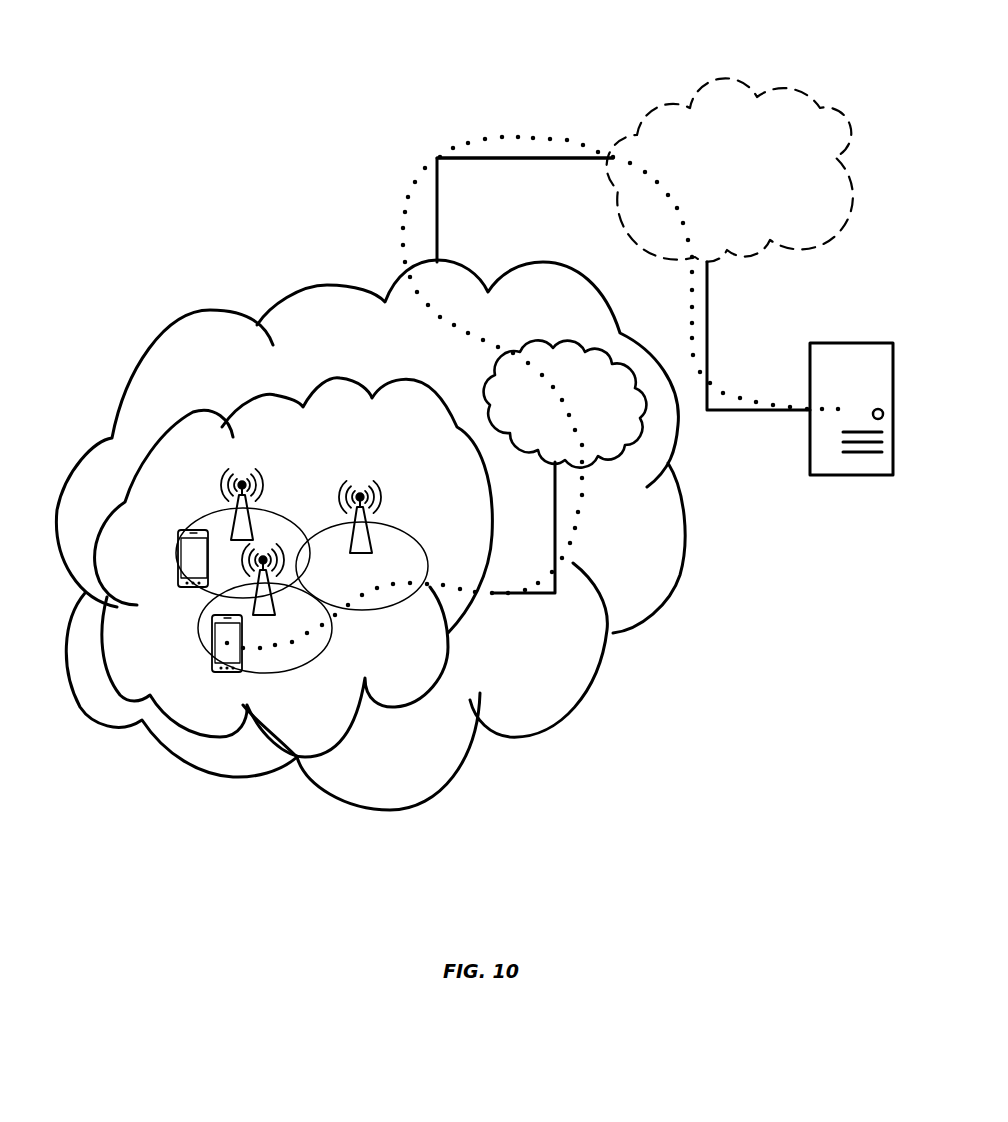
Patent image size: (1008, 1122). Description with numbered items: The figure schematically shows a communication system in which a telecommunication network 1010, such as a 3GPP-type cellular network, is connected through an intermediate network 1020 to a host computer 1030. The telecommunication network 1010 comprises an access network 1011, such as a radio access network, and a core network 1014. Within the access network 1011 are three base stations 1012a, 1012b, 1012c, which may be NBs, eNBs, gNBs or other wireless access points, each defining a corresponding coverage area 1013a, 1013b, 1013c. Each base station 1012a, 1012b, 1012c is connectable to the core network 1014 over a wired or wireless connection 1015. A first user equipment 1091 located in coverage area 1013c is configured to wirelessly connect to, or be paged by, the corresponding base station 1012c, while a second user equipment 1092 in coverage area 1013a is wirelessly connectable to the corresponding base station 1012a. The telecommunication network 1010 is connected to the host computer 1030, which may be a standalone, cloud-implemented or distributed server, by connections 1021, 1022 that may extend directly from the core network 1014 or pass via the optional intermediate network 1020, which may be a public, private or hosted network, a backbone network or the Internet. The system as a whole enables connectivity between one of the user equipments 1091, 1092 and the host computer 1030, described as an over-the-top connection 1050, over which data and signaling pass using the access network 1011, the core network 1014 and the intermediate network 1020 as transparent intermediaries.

The telecommunication network 1010 is at (370, 535).
The access network 1011 is at (294, 567).
The base station 1012a is at (275, 616).
The base station 1012b is at (375, 497).
The base station 1012c is at (236, 486).
The coverage area 1013a is at (332, 628).
The coverage area 1013b is at (428, 567).
The coverage area 1013c is at (185, 528).
The core network 1014 is at (565, 403).
The connection 1015 is at (556, 507).
The intermediate network 1020 is at (730, 169).
The connection 1021 is at (520, 157).
The connection 1022 is at (763, 410).
The host computer 1030 is at (851, 425).
The OTT connection 1050 is at (412, 185).
The first user equipment 1091 is at (175, 540).
The second user equipment 1092 is at (212, 658).